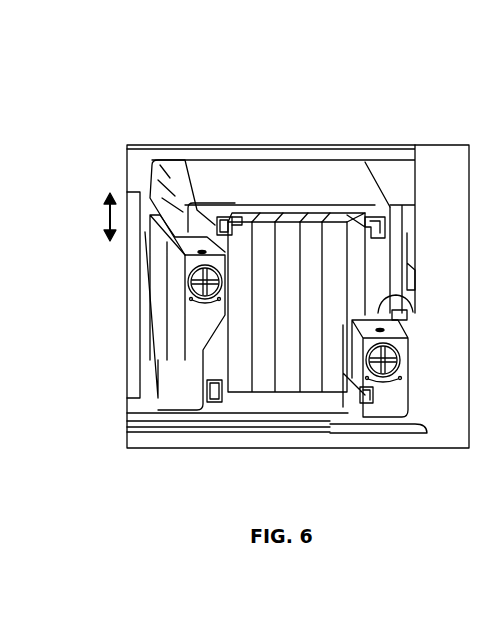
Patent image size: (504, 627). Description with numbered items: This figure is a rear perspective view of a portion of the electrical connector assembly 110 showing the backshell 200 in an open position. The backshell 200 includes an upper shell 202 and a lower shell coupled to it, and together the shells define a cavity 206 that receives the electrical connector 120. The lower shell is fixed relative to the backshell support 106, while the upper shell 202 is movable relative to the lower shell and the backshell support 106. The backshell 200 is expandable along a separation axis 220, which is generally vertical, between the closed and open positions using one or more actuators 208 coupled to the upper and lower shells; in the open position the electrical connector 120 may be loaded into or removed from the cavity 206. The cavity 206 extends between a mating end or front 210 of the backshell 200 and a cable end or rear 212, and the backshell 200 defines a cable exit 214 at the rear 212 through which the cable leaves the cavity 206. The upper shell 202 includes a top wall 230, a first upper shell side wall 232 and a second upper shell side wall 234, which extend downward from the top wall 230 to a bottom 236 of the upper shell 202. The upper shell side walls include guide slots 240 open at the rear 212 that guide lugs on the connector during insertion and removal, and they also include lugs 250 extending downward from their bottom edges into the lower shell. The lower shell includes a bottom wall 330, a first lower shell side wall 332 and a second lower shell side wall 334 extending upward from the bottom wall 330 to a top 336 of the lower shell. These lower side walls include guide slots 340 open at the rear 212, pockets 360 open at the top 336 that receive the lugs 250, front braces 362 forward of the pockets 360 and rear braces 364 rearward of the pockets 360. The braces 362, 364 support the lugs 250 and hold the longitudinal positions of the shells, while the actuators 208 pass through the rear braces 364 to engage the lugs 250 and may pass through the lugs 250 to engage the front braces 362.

The electrical connector assembly 110 is at (133, 124).
The backshell support 106 is at (382, 160).
The top wall 230 is at (212, 173).
The first upper shell side wall 232 is at (160, 183).
The separation axis 220 is at (104, 217).
The rear 212 is at (334, 210).
The cable exit 214 is at (361, 167).
The front 210 is at (288, 152).
The electrical connector 120 is at (263, 237).
The rear brace 364 is at (233, 216).
The bottom 236 is at (190, 207).
The guide slot 240 is at (383, 221).
The cavity 206 is at (358, 256).
The upper shell 202 is at (373, 270).
The second upper shell side wall 234 is at (408, 277).
The lug 250 is at (180, 228).
The top 336 is at (188, 280).
The second lower shell side wall 334 is at (402, 363).
The actuator 208 is at (180, 240).
The first lower shell side wall 332 is at (202, 360).
The guide slot 340 is at (213, 400).
The bottom wall 330 is at (253, 410).
The backshell 200 is at (358, 420).
The pocket 360 is at (194, 231).
The front brace 362 is at (188, 235).